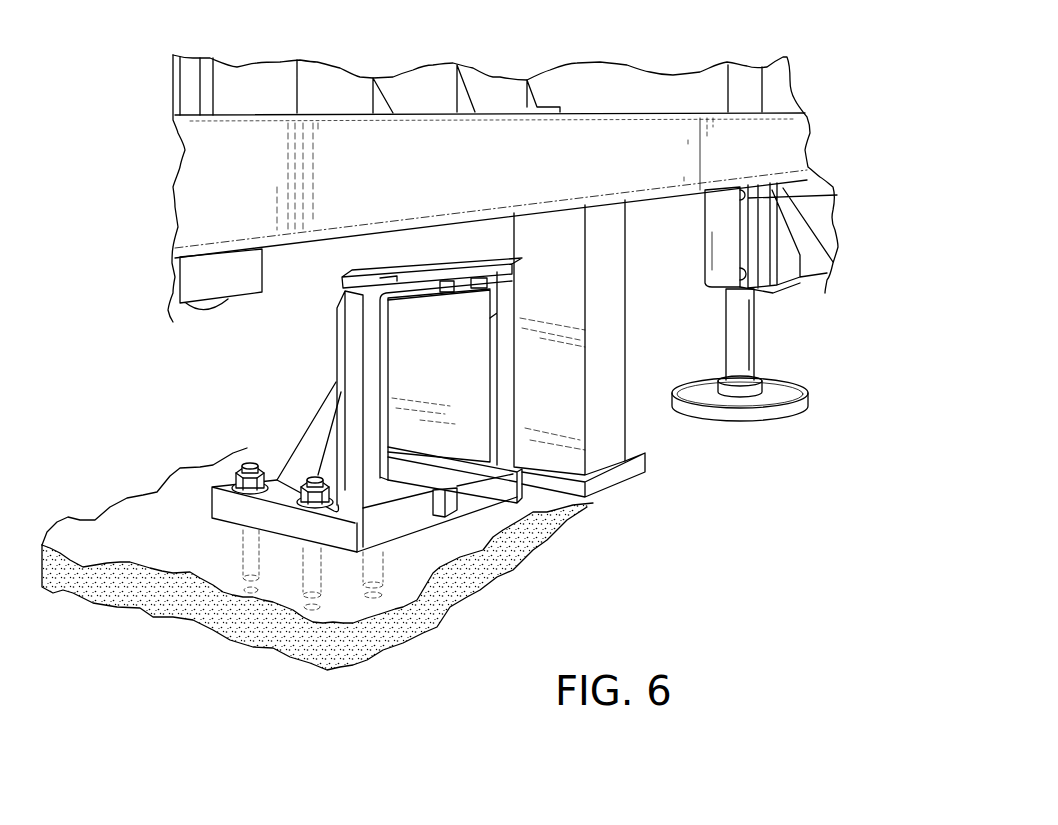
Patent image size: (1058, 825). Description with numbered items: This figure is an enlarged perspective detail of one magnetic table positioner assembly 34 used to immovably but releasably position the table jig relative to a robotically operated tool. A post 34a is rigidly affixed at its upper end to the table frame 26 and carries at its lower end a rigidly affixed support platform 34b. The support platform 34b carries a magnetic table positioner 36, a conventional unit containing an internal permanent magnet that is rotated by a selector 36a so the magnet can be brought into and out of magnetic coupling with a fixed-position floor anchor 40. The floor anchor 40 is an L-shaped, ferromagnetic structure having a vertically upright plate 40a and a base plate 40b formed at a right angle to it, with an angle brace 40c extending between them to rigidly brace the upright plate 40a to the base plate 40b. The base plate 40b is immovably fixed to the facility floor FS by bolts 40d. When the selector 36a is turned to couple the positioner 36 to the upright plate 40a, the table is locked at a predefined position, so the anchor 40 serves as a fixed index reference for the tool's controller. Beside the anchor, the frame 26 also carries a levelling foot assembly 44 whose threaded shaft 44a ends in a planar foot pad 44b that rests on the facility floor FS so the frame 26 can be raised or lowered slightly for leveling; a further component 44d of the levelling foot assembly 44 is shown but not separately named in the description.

The table frame 26 is at (643, 165).
The magnetic table positioner assembly 34 is at (405, 247).
The post 34a is at (565, 401).
The support platform 34b is at (620, 480).
The magnetic table positioner 36 is at (452, 361).
The selector 36a is at (487, 263).
The floor anchor 40 is at (320, 481).
The upright plate 40a is at (342, 345).
The base plate 40b is at (240, 510).
The angle brace 40c is at (328, 423).
The bolts 40d is at (248, 465).
The levelling foot assembly 44 is at (744, 210).
The threaded shaft 44a is at (740, 82).
The foot pad 44b is at (785, 392).
The leveler housing 44d is at (727, 217).
The facility floor FS is at (80, 527).